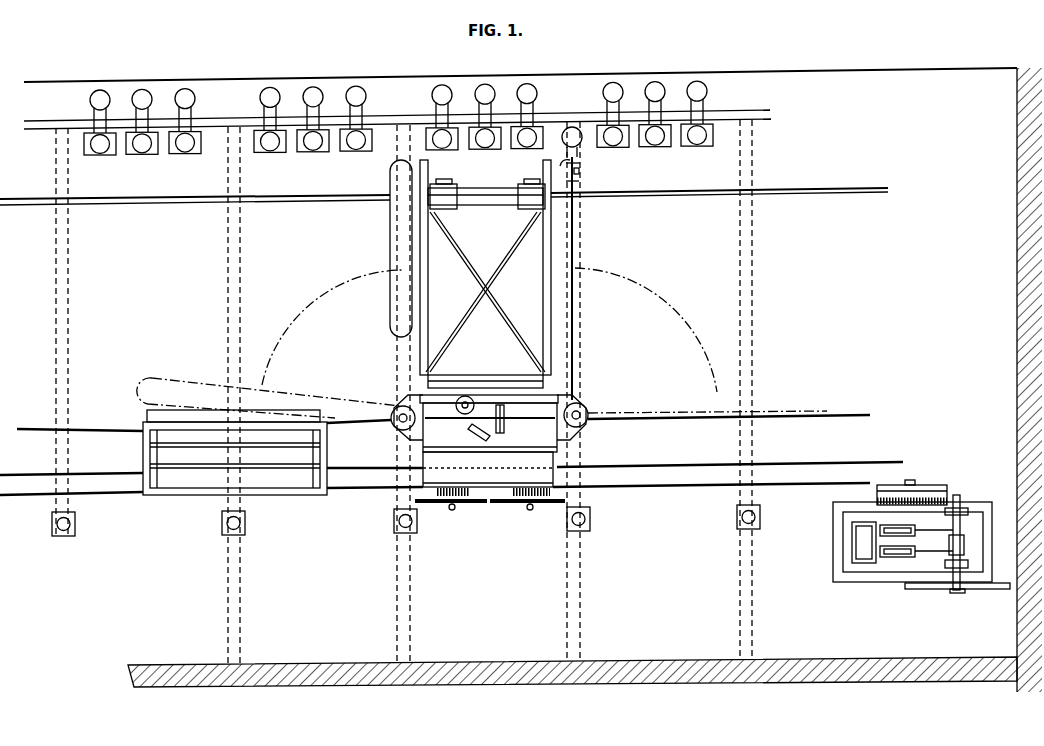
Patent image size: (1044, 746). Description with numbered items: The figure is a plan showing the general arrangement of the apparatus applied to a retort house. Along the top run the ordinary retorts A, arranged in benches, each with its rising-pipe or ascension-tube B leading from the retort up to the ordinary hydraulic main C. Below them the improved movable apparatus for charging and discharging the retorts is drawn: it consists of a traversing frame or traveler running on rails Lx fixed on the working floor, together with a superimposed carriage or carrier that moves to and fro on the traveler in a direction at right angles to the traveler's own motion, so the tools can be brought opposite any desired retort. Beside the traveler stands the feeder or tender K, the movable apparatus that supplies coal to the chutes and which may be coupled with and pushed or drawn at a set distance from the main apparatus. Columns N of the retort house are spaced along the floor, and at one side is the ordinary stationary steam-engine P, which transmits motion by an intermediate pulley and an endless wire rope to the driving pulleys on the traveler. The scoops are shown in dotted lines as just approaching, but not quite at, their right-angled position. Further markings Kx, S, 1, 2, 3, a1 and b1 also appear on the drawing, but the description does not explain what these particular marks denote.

The retorts A is at (397, 120).
The rising-pipes or ascension-tubes B is at (398, 139).
The hydraulic main C is at (398, 107).
The feeder or tender K is at (235, 458).
The guide rod Kx is at (435, 455).
The rails Lx is at (451, 330).
The columns N is at (406, 520).
The stationary steam-engine P is at (921, 536).
The swinging arm S is at (268, 400).
The upper brace 1 is at (487, 236).
The lower brace 2 is at (487, 318).
The vertical tube 3 is at (486, 258).
The arm in horizontal position a1 is at (707, 409).
The hook rod b1 is at (697, 266).